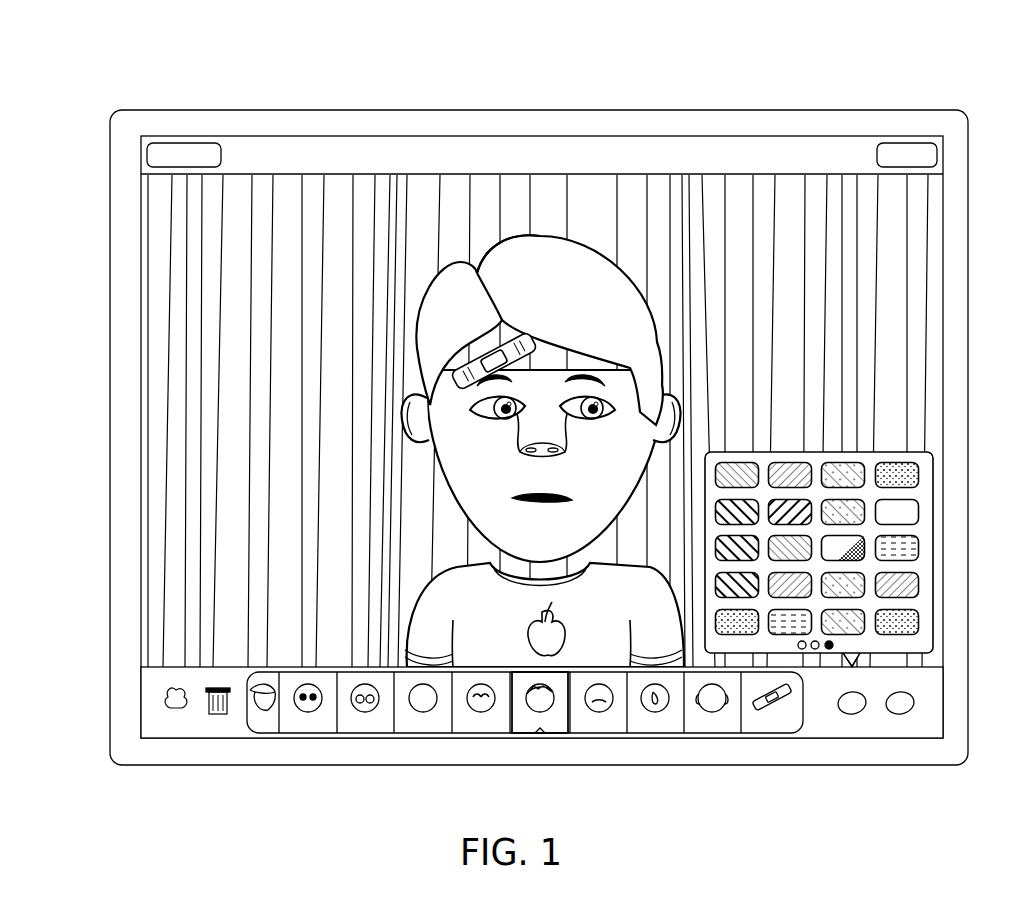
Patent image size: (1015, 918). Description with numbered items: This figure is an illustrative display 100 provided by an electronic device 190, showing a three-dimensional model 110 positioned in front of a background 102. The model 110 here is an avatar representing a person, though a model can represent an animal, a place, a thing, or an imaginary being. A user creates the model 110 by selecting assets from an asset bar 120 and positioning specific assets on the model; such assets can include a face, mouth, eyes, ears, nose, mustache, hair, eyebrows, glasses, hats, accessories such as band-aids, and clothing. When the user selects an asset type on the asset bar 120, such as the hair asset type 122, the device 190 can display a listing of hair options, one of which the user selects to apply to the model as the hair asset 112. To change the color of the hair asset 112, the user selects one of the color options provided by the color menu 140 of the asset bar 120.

The display 100 is at (543, 88).
The background 102 is at (237, 245).
The model 110 is at (553, 362).
The hair asset 112 is at (607, 283).
The asset bar 120 is at (292, 713).
The hair asset type 122 is at (553, 718).
The color menu 140 is at (926, 648).
The electronic device 190 is at (542, 740).